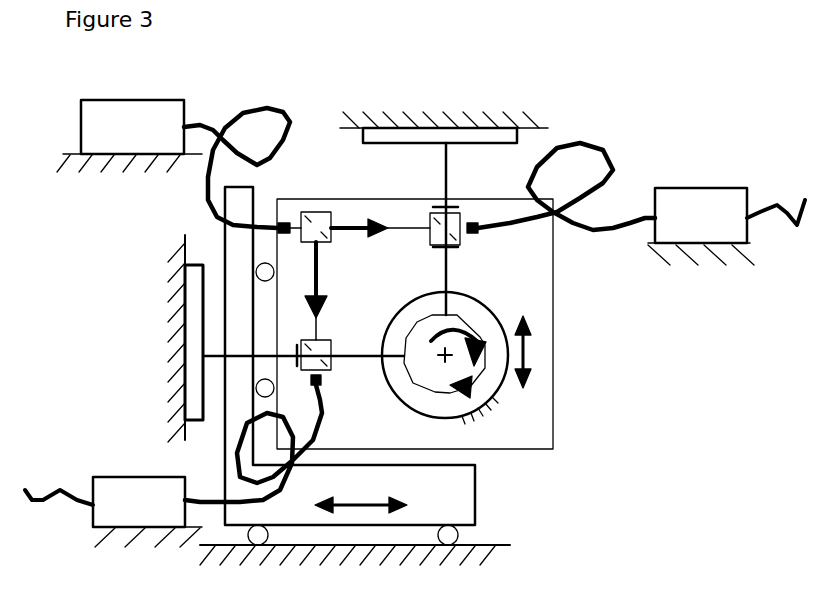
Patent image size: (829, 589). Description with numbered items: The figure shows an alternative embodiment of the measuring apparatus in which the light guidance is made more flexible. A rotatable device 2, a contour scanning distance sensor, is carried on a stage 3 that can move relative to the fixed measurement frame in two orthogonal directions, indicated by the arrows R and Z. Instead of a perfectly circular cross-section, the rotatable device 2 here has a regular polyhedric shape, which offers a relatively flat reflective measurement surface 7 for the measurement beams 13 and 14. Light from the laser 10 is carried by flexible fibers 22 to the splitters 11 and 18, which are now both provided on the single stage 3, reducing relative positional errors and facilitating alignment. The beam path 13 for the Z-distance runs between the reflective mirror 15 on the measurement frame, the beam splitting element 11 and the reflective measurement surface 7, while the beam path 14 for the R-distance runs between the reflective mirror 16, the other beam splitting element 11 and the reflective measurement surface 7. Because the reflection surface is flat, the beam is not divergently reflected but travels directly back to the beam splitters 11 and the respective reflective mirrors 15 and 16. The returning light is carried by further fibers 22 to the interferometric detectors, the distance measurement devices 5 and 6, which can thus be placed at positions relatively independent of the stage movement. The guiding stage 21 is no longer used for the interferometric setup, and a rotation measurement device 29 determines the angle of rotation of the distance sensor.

The rotatable device 2 is at (418, 374).
The stage 3 is at (522, 278).
The distance measurement device 5 is at (696, 226).
The distance measurement device 6 is at (140, 516).
The reflective measurement surface 7 is at (407, 352).
The laser 10 is at (129, 136).
The beam splitting element 11 is at (462, 217).
The beam path 13 is at (443, 180).
The beam path 14 is at (227, 352).
The reflective mirror 15 is at (458, 127).
The reflective mirror 16 is at (193, 385).
The splitter 18 is at (317, 215).
The guiding stage 21 is at (447, 507).
The fibers 22 is at (205, 197).
The rotation measurement device 29 is at (497, 403).